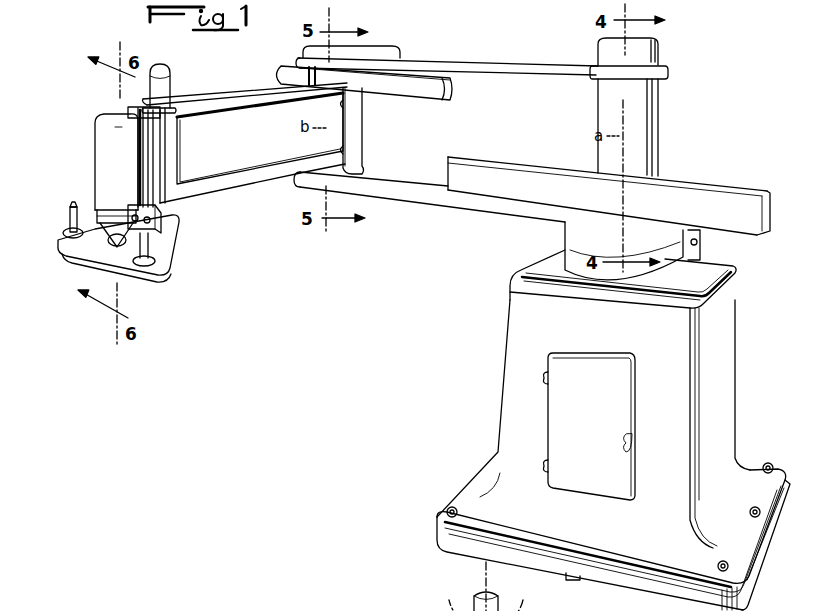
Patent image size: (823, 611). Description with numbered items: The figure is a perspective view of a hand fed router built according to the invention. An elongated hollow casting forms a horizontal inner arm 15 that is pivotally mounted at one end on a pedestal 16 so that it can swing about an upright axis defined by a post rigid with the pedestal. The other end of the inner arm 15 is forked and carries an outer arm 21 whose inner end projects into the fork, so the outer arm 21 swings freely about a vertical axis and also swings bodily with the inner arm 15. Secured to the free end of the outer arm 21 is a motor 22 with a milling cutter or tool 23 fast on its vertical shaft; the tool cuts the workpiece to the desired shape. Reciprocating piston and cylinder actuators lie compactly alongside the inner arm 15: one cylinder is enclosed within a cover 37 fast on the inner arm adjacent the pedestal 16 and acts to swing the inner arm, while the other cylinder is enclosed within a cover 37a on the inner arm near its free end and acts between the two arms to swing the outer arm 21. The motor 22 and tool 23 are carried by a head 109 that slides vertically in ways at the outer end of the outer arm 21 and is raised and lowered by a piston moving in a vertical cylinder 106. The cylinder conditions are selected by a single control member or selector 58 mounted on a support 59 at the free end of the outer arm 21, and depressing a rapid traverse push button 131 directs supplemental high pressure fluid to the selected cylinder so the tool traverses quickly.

The inner arm 15 is at (504, 66).
The pedestal 16 is at (507, 353).
The outer arm 21 is at (240, 170).
The motor 22 is at (105, 142).
The tool 23 is at (104, 263).
The cover 37 is at (531, 198).
The cover 37a is at (410, 91).
The selector 58 is at (62, 213).
The support 59 is at (65, 254).
The cylinder 106 is at (168, 90).
The head 109 is at (140, 178).
The rapid traverse push button 131 is at (74, 204).